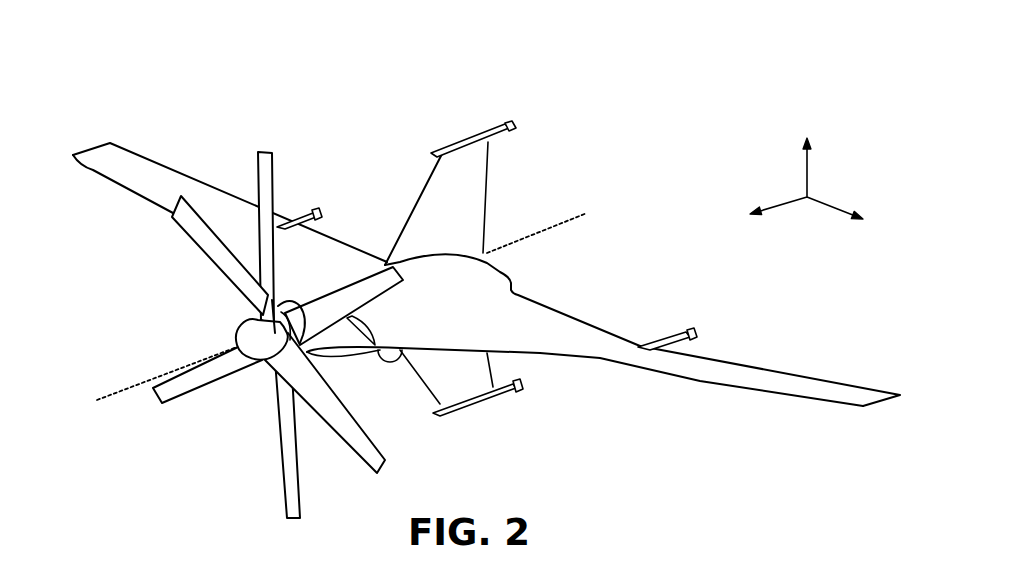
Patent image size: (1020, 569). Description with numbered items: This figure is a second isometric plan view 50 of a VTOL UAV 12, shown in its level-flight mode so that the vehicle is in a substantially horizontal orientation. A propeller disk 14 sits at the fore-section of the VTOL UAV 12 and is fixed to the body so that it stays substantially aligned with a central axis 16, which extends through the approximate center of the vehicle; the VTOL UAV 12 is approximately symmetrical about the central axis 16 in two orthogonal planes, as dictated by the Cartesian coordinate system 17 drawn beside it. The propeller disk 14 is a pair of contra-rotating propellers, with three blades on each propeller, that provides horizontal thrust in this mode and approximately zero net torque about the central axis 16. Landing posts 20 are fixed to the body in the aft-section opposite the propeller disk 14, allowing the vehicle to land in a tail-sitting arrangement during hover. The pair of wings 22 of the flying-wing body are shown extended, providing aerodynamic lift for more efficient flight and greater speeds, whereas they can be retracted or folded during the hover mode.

The second isometric plan view 50 is at (144, 69).
The VTOL UAV 12 is at (587, 159).
The propeller disk 14 is at (231, 306).
The central axis 16 is at (132, 387).
The Cartesian coordinate system 17 is at (774, 166).
The landing posts 20 is at (320, 208).
The wings 22 is at (136, 155).